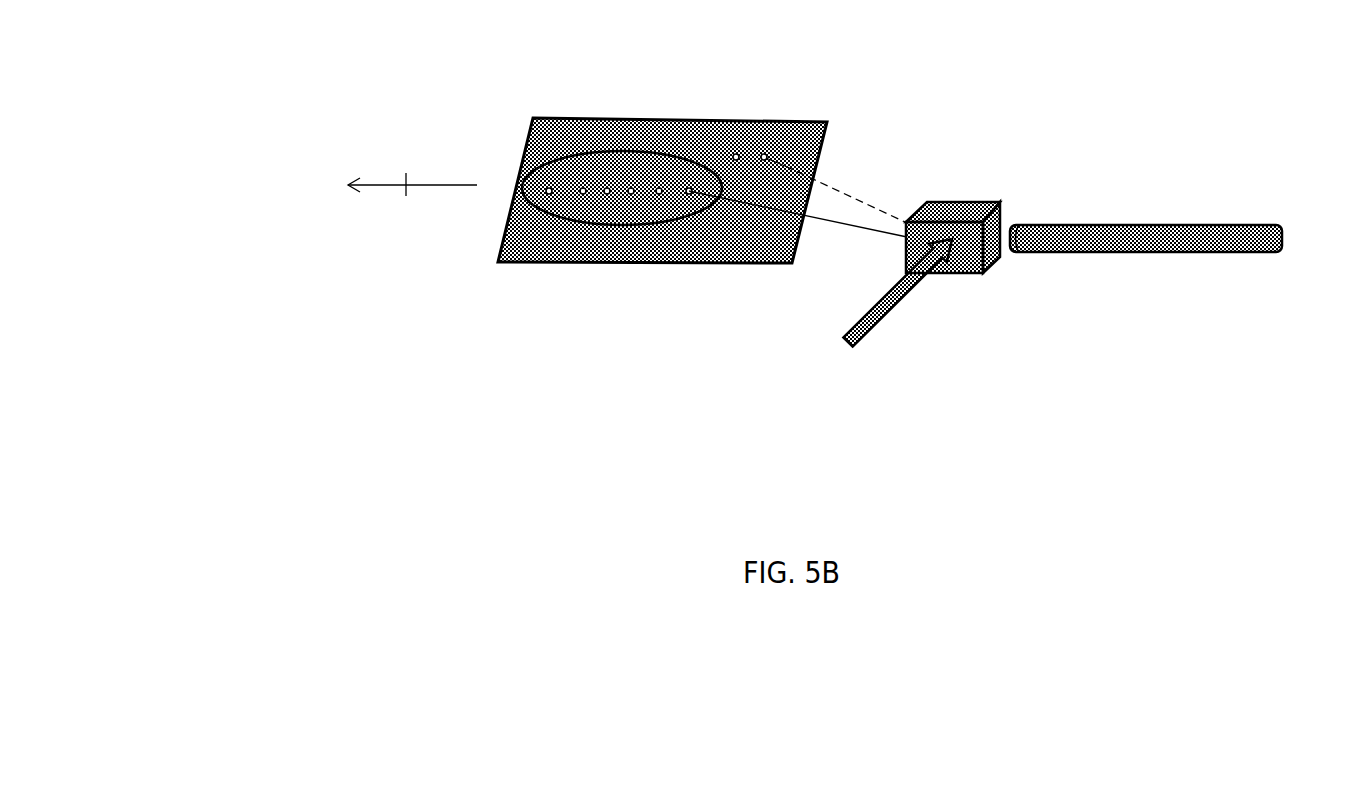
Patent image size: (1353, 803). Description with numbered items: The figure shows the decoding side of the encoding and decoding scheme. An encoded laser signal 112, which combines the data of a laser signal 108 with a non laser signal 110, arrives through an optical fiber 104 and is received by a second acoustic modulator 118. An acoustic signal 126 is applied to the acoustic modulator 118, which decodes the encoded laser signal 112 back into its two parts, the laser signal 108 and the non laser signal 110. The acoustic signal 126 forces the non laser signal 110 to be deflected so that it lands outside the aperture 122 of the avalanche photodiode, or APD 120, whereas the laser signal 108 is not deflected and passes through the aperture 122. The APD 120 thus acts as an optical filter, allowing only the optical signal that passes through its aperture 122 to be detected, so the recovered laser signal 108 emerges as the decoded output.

The optical fiber 104 is at (1180, 284).
The laser signal 108 is at (320, 203).
The non laser signal 110 is at (897, 152).
The encoded laser signal 112 is at (1164, 166).
The second acoustic modulator 118 is at (870, 330).
The avalanche photodiode (APD) 120 is at (597, 261).
The aperture 122 is at (613, 147).
The acoustic signal 126 is at (917, 295).